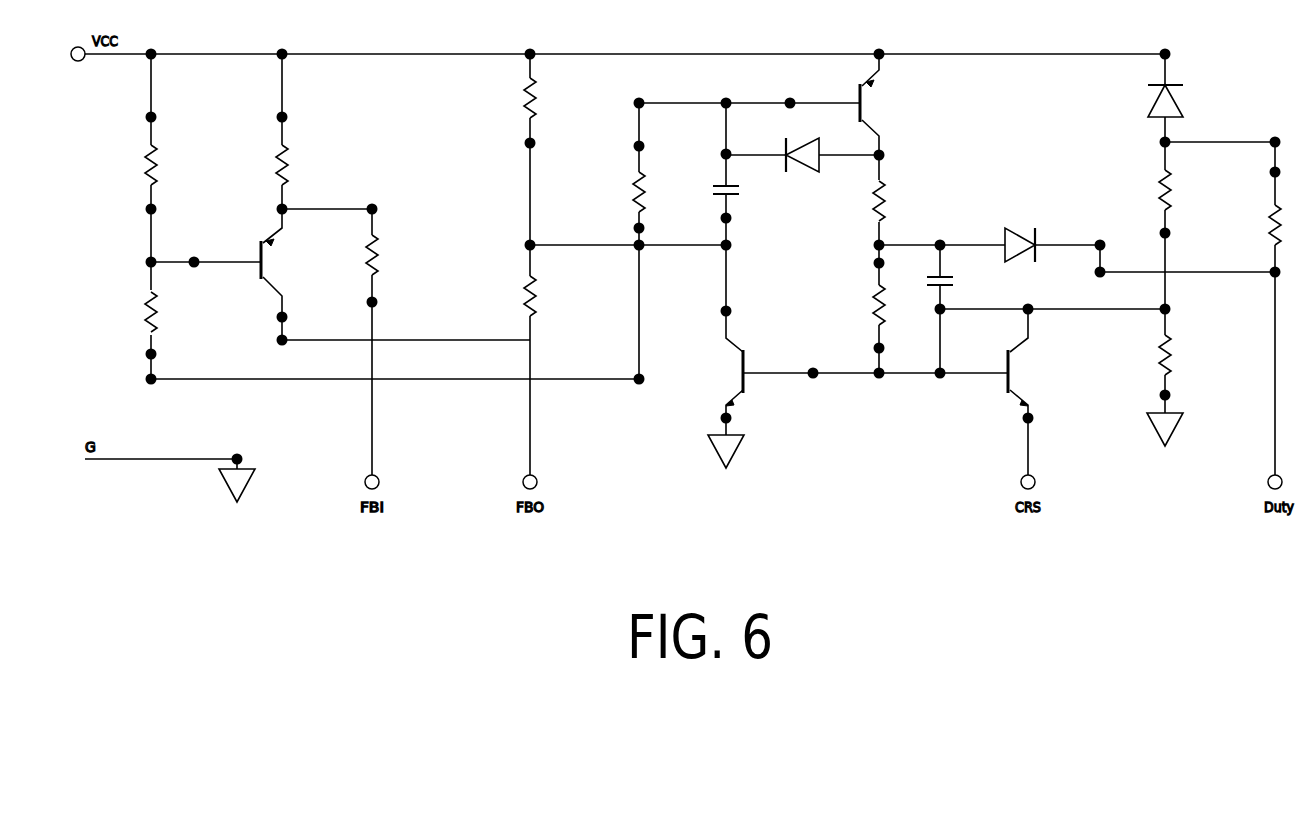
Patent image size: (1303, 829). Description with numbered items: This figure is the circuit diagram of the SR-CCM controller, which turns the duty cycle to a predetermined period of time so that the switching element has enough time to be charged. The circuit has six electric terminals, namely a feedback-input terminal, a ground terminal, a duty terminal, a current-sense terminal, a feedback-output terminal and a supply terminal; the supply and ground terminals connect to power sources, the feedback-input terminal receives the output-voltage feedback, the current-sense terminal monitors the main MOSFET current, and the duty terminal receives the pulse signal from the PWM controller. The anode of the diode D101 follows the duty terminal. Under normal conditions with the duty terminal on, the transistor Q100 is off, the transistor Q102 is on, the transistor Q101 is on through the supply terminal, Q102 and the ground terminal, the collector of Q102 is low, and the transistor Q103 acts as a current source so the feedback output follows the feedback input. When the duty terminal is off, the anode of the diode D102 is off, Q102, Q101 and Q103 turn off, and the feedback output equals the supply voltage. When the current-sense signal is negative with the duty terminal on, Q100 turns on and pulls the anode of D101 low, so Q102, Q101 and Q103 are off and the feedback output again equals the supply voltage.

The transistor Q100 is at (1036, 399).
The transistor Q101 is at (879, 104).
The transistor Q102 is at (719, 389).
The transistor Q103 is at (395, 277).
The diode D101 is at (1143, 98).
The diode D102 is at (802, 145).